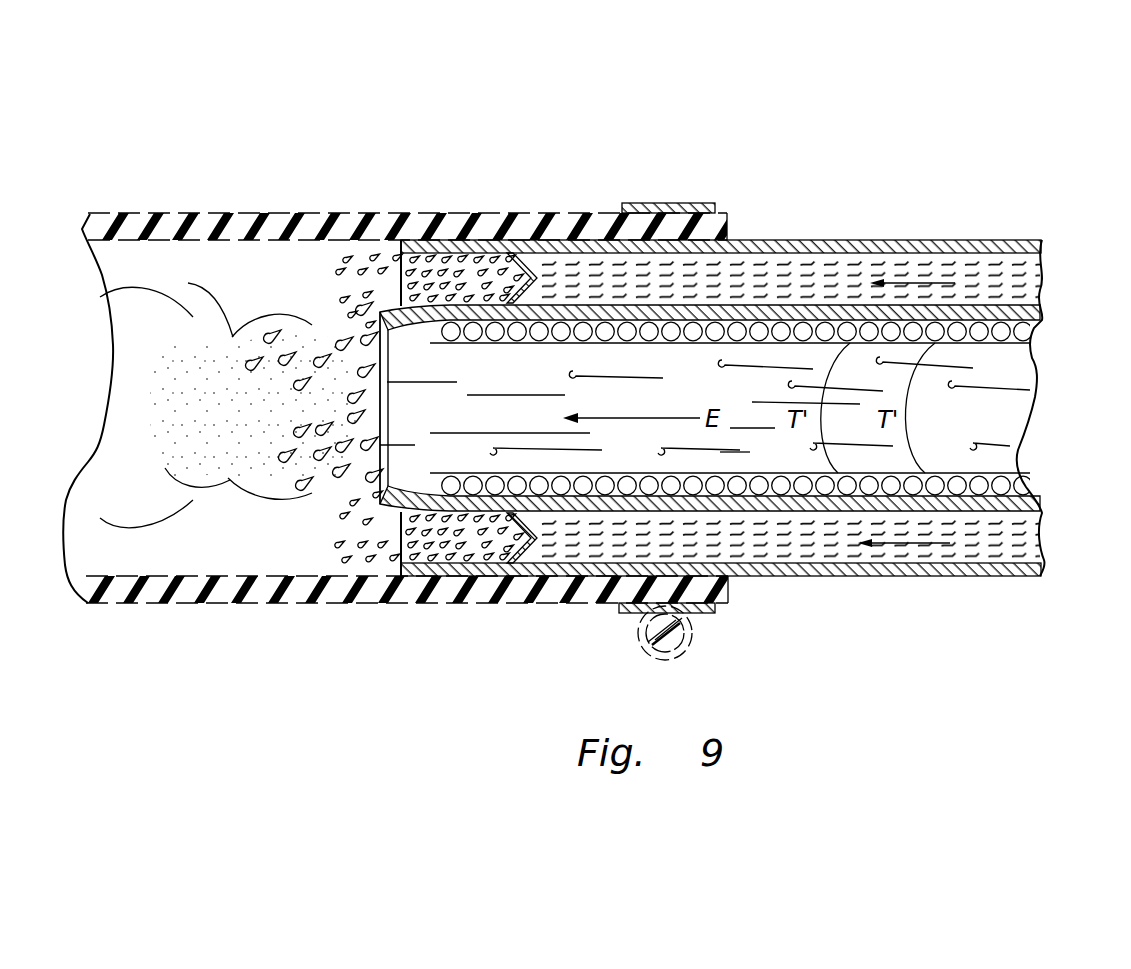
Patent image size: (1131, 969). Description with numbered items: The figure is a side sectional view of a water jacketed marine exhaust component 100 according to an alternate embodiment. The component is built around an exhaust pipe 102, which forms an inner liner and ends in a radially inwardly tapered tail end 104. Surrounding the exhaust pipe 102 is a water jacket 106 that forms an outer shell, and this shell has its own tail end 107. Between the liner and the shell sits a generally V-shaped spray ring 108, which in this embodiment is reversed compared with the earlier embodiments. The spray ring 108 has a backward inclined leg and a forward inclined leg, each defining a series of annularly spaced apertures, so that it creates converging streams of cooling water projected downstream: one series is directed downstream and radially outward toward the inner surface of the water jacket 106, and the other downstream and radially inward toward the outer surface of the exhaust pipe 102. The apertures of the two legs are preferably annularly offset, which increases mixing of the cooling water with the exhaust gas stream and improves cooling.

The water jacketed exhaust component 100 is at (828, 131).
The exhaust pipe 102 is at (1041, 322).
The tail end 104 is at (400, 333).
The water jacket 106 is at (855, 240).
The tail end 107 is at (411, 252).
The spray ring 108 is at (522, 262).